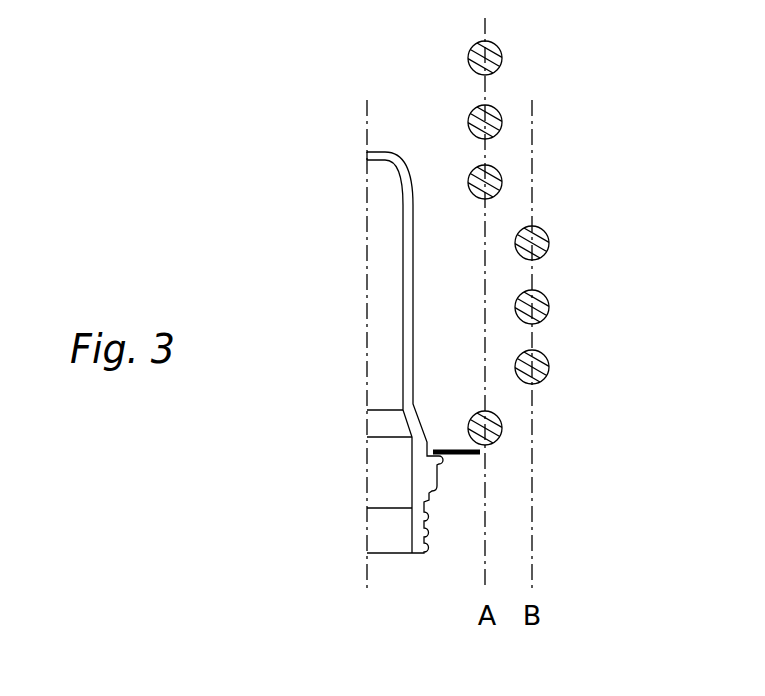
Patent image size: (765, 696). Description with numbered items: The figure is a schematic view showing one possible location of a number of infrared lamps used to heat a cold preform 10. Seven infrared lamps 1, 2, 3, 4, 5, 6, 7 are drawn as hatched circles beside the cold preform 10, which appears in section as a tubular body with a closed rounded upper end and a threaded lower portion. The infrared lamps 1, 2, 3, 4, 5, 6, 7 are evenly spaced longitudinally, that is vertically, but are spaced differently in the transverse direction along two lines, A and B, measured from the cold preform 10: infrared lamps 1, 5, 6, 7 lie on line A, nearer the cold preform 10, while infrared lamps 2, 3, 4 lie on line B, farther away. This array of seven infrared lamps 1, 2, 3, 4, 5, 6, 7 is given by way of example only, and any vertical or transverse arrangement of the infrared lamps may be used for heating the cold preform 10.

The cold preform 10 is at (378, 150).
The infrared lamp 1 is at (541, 429).
The infrared lamp 2 is at (564, 368).
The infrared lamp 3 is at (564, 308).
The infrared lamp 4 is at (564, 244).
The infrared lamp 5 is at (541, 183).
The infrared lamp 6 is at (541, 123).
The infrared lamp 7 is at (541, 59).